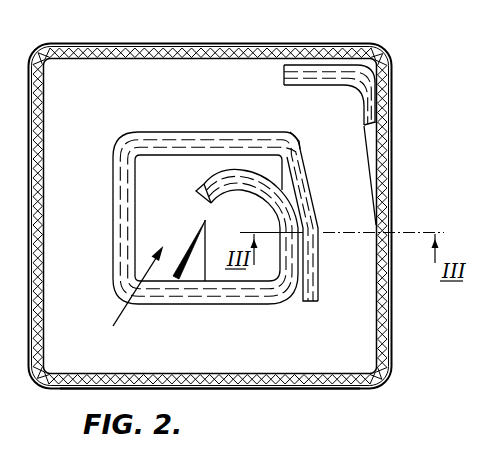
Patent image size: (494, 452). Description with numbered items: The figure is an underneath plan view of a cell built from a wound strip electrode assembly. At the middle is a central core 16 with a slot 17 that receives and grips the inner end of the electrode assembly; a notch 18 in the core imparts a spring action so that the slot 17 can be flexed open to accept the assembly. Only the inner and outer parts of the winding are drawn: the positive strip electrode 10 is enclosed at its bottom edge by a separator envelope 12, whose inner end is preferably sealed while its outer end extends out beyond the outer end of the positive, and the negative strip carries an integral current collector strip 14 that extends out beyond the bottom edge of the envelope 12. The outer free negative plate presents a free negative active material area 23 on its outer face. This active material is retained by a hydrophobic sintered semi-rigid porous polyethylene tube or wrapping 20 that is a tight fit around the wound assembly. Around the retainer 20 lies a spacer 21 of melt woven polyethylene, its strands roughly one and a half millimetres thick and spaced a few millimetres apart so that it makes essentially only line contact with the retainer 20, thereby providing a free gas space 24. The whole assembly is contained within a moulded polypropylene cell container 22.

The positive strip electrode 10 is at (297, 72).
The separator envelope 12 is at (343, 70).
The current collector strip 14 is at (204, 55).
The central core 16 is at (129, 304).
The slot 17 is at (198, 194).
The notch 18 is at (201, 263).
The porous polyethylene tube or wrapping 20 is at (390, 305).
The spacer 21 is at (387, 344).
The cell container 22 is at (380, 389).
The free negative active material area 23 is at (108, 62).
The free gas space 24 is at (242, 389).